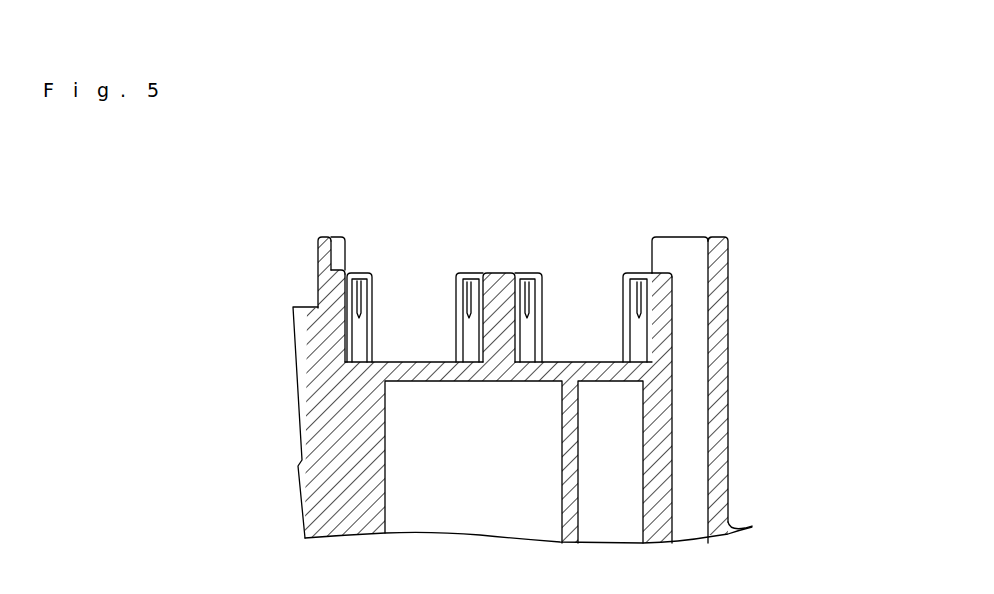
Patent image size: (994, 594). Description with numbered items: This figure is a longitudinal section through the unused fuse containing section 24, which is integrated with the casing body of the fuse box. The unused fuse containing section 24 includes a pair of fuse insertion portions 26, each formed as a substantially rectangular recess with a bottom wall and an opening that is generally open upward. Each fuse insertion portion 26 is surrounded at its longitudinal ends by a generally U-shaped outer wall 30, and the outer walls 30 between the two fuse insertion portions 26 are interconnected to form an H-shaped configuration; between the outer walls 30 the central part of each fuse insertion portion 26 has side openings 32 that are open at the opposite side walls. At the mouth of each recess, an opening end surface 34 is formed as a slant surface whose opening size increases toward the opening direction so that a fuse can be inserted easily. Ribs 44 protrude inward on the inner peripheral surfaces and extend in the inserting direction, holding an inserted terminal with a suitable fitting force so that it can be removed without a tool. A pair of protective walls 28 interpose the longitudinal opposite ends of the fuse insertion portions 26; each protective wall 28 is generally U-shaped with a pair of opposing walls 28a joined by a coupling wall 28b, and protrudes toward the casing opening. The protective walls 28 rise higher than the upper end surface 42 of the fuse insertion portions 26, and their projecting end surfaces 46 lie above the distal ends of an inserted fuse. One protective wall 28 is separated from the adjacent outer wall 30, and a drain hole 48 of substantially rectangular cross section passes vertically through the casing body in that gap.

The unused fuse containing section 24 is at (540, 345).
The fuse insertion portion 26 is at (506, 370).
The protective wall 28 is at (526, 366).
The opposing wall 28a is at (338, 242).
The coupling wall 28b is at (323, 262).
The outer wall 30 is at (338, 294).
The side opening 32 is at (458, 310).
The opening end surface 34 is at (481, 275).
The upper end surface 42 is at (500, 275).
The rib 44 is at (360, 282).
The projecting end surface 46 is at (327, 238).
The drain hole 48 is at (730, 384).